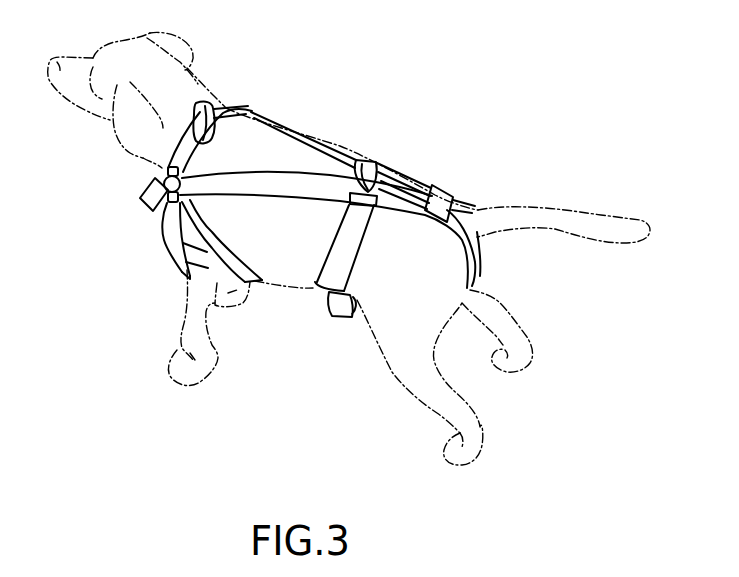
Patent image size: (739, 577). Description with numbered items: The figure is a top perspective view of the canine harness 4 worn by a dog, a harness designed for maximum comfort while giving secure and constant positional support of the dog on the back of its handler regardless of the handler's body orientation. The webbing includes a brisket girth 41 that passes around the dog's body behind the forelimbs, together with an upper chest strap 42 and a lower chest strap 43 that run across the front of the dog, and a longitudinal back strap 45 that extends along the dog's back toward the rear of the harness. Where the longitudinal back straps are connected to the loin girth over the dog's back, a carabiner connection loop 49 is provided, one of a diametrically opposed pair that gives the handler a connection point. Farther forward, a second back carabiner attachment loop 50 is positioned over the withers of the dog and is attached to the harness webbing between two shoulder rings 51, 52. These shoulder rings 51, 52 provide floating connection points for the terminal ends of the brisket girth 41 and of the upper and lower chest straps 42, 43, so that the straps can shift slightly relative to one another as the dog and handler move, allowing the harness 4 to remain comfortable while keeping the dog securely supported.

The canine harness 4 is at (429, 178).
The brisket girth 41 is at (205, 236).
The upper chest strap 42 is at (150, 199).
The lower chest strap 43 is at (175, 233).
The longitudinal back strap 45 is at (290, 185).
The carabiner connection loop 49 is at (377, 158).
The second back carabiner attachment loop 50 is at (223, 97).
The shoulder ring 51 is at (162, 169).
The shoulder ring 52 is at (254, 113).